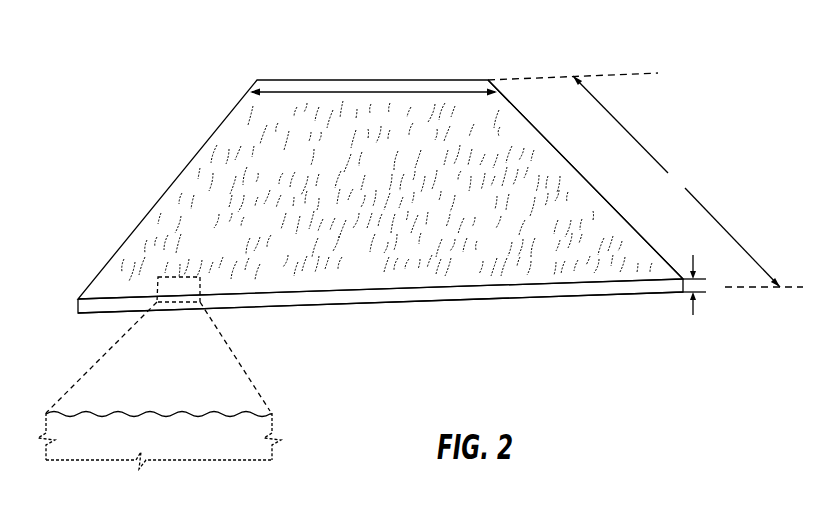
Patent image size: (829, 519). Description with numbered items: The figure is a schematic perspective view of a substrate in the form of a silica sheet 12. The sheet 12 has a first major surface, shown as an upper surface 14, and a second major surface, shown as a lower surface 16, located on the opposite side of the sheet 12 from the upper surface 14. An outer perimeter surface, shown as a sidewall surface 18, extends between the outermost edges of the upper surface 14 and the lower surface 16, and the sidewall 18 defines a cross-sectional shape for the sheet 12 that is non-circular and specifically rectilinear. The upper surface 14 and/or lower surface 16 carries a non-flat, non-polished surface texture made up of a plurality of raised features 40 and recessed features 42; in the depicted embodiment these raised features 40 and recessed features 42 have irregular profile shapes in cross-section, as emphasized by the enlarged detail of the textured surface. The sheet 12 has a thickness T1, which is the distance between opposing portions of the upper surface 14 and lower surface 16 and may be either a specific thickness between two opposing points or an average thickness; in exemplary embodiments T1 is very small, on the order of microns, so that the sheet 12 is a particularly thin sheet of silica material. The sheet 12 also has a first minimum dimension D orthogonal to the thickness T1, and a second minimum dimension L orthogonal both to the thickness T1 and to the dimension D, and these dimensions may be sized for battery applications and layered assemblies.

The silica sheet 12 is at (160, 165).
The upper surface 14 is at (613, 227).
The lower surface 16 is at (587, 303).
The sidewall surface 18 is at (443, 292).
The raised features 40 is at (197, 220).
The recessed features 42 is at (410, 248).
The first minimum dimension D is at (425, 90).
The second minimum dimension L is at (645, 180).
The thickness T1 is at (703, 285).